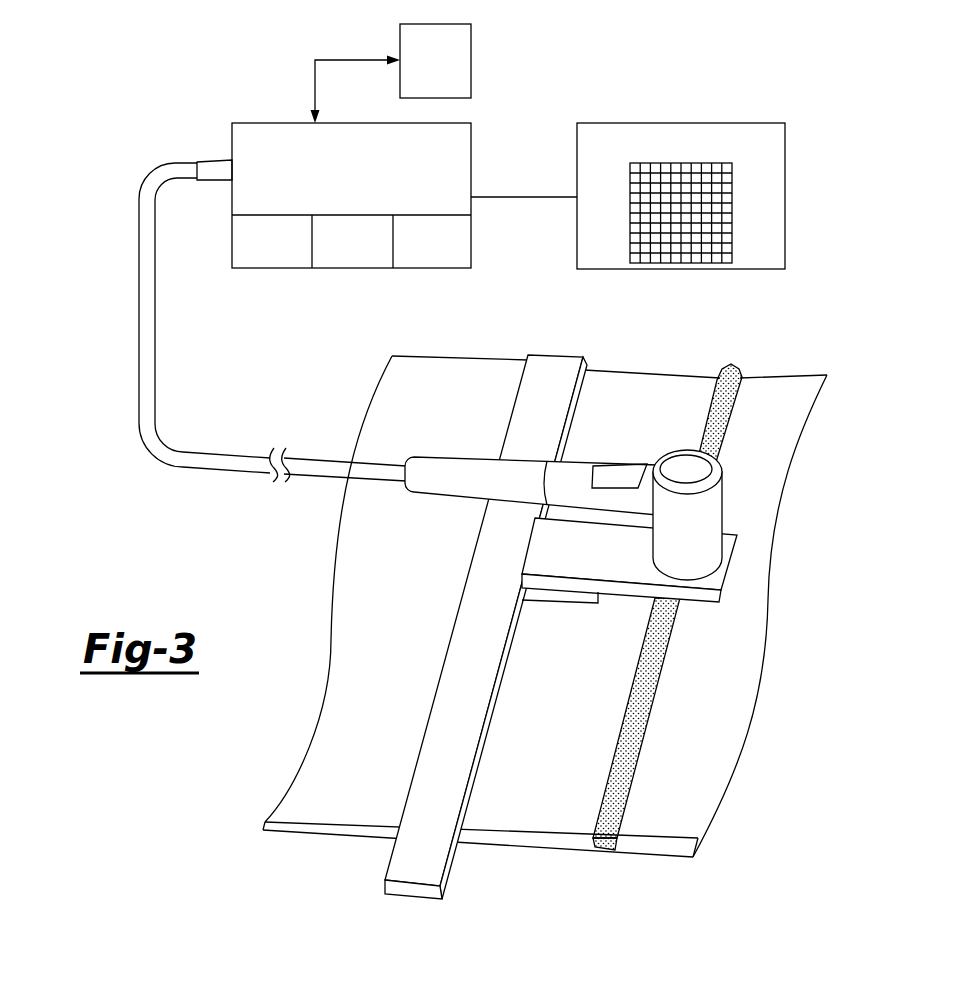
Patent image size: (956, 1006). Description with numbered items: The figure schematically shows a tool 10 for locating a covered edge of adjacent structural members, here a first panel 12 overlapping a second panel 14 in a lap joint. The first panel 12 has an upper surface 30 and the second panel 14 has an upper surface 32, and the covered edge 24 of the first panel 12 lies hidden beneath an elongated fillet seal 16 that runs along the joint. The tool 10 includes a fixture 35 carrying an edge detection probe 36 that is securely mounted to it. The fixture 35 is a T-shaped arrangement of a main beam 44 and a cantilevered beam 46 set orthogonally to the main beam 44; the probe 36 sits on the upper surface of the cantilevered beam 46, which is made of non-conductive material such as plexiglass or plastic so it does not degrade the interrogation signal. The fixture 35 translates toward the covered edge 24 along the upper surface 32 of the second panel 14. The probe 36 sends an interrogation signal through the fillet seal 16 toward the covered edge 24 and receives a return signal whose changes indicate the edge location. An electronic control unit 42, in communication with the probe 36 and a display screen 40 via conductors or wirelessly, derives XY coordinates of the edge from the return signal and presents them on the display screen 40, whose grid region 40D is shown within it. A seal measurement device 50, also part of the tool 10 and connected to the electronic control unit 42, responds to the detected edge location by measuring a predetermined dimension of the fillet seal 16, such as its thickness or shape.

The tool 10 is at (127, 131).
The first panel 12 is at (701, 743).
The second panel 14 is at (564, 733).
The fillet seal 16 is at (742, 368).
The covered edge 24 is at (603, 836).
The upper surface 30 is at (728, 678).
The upper surface 32 is at (317, 800).
The fixture 35 is at (575, 343).
The edge detection probe 36 is at (692, 518).
The display screen 40 is at (785, 147).
The display grid 40D is at (732, 207).
The electronic control unit 42 is at (258, 122).
The main beam 44 is at (500, 598).
The cantilevered beam 46 is at (609, 564).
The seal measurement device 50 is at (471, 61).